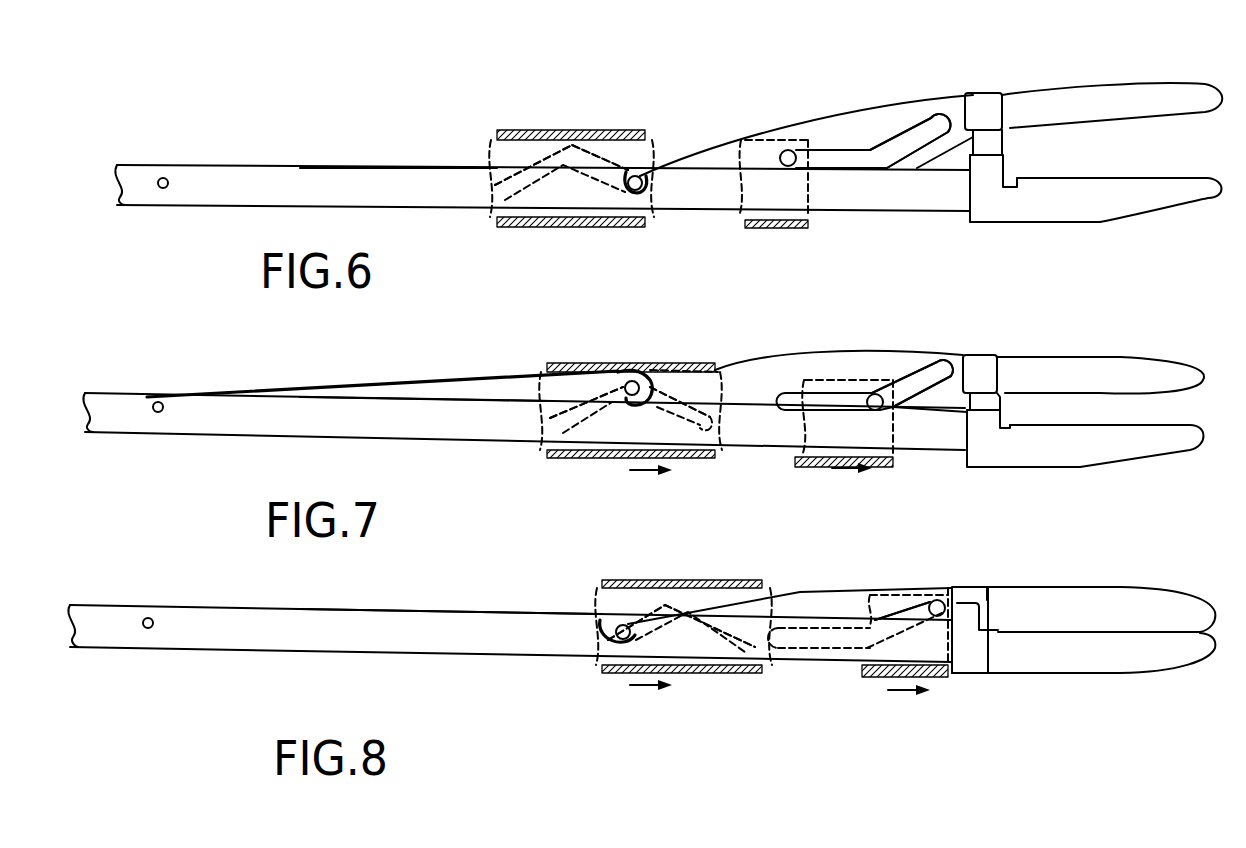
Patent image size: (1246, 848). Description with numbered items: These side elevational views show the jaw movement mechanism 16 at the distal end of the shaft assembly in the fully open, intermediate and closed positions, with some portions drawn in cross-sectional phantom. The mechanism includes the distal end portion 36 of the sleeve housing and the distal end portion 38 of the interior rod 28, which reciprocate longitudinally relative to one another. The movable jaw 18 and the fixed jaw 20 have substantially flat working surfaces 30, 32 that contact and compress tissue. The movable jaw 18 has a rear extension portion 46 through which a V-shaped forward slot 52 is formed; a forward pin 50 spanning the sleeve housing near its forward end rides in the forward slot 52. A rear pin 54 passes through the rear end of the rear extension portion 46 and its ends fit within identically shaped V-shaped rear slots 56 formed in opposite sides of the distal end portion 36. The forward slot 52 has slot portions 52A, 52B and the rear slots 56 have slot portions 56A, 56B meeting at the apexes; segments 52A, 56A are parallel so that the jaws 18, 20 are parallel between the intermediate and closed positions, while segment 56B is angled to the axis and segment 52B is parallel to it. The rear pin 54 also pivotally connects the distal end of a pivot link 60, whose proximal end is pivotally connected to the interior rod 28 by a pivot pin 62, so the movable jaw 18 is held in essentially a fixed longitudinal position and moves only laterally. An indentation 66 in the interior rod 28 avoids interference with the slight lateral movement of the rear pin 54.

In FIG. 6, the jaw movement mechanism 16 is at (502, 116).
In FIG. 7, the jaw movement mechanism 16 is at (500, 350).
In FIG. 8, the jaw movement mechanism 16 is at (583, 575).
In FIG. 6, the movable jaw 18 is at (1056, 91).
In FIG. 7, the movable jaw 18 is at (1098, 357).
In FIG. 8, the movable jaw 18 is at (1098, 587).
In FIG. 6, the fixed jaw 20 is at (1058, 222).
In FIG. 7, the fixed jaw 20 is at (1080, 467).
In FIG. 8, the fixed jaw 20 is at (1040, 674).
In FIG. 6, the interior rod 28 is at (145, 206).
In FIG. 7, the interior rod 28 is at (108, 433).
In FIG. 8, the interior rod 28 is at (112, 648).
In FIG. 6, the working surface 30 is at (1106, 126).
In FIG. 7, the working surface 30 is at (1150, 392).
In FIG. 8, the working surface 30 is at (1165, 632).
In FIG. 6, the working surface 32 is at (1100, 178).
In FIG. 7, the working surface 32 is at (1152, 434).
In FIG. 8, the working surface 32 is at (1115, 636).
In FIG. 6, the distal end portion of the sleeve housing 36 is at (545, 130).
In FIG. 7, the distal end portion of the sleeve housing 36 is at (800, 467).
In FIG. 8, the distal end portion of the sleeve housing 36 is at (800, 676).
In FIG. 6, the distal end portion of the interior rod 38 is at (440, 206).
In FIG. 7, the distal end portion of the interior rod 38 is at (470, 446).
In FIG. 8, the distal end portion of the interior rod 38 is at (465, 651).
In FIG. 6, the rear extension portion 46 is at (788, 116).
In FIG. 7, the rear extension portion 46 is at (842, 348).
In FIG. 8, the rear extension portion 46 is at (800, 590).
In FIG. 6, the forward pin 50 is at (795, 152).
In FIG. 7, the forward pin 50 is at (878, 395).
In FIG. 8, the forward pin 50 is at (940, 600).
In FIG. 6, the forward slot 52 is at (878, 149).
In FIG. 7, the forward slot 52 is at (900, 412).
In FIG. 8, the forward slot 52 is at (873, 618).
In FIG. 6, the slot portion 52A is at (920, 130).
In FIG. 7, the slot portion 52A is at (929, 368).
In FIG. 8, the slot portion 52A is at (905, 598).
In FIG. 6, the slot portion 52B is at (868, 170).
In FIG. 7, the slot portion 52B is at (826, 380).
In FIG. 8, the slot portion 52B is at (830, 620).
In FIG. 6, the rear pin 54 is at (643, 177).
In FIG. 7, the rear pin 54 is at (629, 380).
In FIG. 8, the rear pin 54 is at (626, 624).
In FIG. 6, the rear slots 56 is at (601, 128).
In FIG. 7, the rear slots 56 is at (662, 364).
In FIG. 8, the rear slots 56 is at (680, 570).
In FIG. 6, the slot portion 56A is at (530, 192).
In FIG. 7, the slot portion 56A is at (553, 459).
In FIG. 8, the slot portion 56A is at (632, 678).
In FIG. 6, the slot portion 56B is at (603, 192).
In FIG. 7, the slot portion 56B is at (693, 459).
In FIG. 8, the slot portion 56B is at (722, 673).
In FIG. 7, the pivot link 60 is at (458, 385).
In FIG. 6, the pivot pin 62 is at (166, 178).
In FIG. 7, the pivot pin 62 is at (162, 403).
In FIG. 8, the pivot pin 62 is at (152, 619).
In FIG. 6, the indentation 66 is at (646, 190).
In FIG. 7, the indentation 66 is at (626, 410).
In FIG. 8, the indentation 66 is at (606, 626).